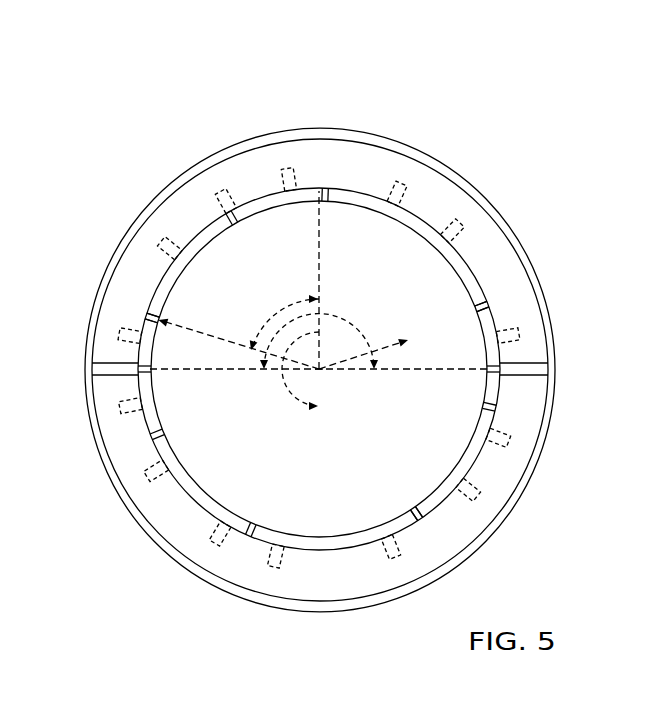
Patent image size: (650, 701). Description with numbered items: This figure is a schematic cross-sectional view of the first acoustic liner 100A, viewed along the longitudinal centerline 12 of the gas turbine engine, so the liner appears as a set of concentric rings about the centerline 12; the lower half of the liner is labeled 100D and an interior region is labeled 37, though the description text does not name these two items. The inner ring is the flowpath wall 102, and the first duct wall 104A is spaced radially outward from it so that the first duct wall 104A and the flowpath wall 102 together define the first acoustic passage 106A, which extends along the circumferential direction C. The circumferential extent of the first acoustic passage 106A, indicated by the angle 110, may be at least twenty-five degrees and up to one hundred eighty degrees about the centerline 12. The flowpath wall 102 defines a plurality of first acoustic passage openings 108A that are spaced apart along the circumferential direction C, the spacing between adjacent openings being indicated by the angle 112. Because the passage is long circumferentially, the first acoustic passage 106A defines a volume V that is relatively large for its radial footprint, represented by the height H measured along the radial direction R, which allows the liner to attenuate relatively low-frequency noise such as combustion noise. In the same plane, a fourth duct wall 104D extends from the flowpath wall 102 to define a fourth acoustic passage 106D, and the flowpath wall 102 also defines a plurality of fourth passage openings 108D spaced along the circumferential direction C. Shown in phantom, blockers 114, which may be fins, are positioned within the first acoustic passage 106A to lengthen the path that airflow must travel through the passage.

The first acoustic liner 100A is at (316, 92).
The lower wheel assembly half 100D is at (191, 430).
The first duct wall 104A is at (375, 142).
The fourth duct wall 104D is at (528, 482).
The first acoustic passage 106A is at (431, 188).
The fourth acoustic passage 106D is at (350, 602).
The flowpath wall 102 is at (207, 258).
The first acoustic passage opening 108A is at (170, 321).
The fourth passage opening 108D is at (413, 497).
The blocker 114 is at (219, 177).
The angle 110 is at (358, 333).
The angle 112 is at (308, 298).
The longitudinal centerline 12 is at (321, 372).
The interior region 37 is at (257, 491).
The height H is at (140, 191).
The volume V is at (262, 185).
The radial direction R is at (386, 335).
The circumferential direction C is at (300, 407).